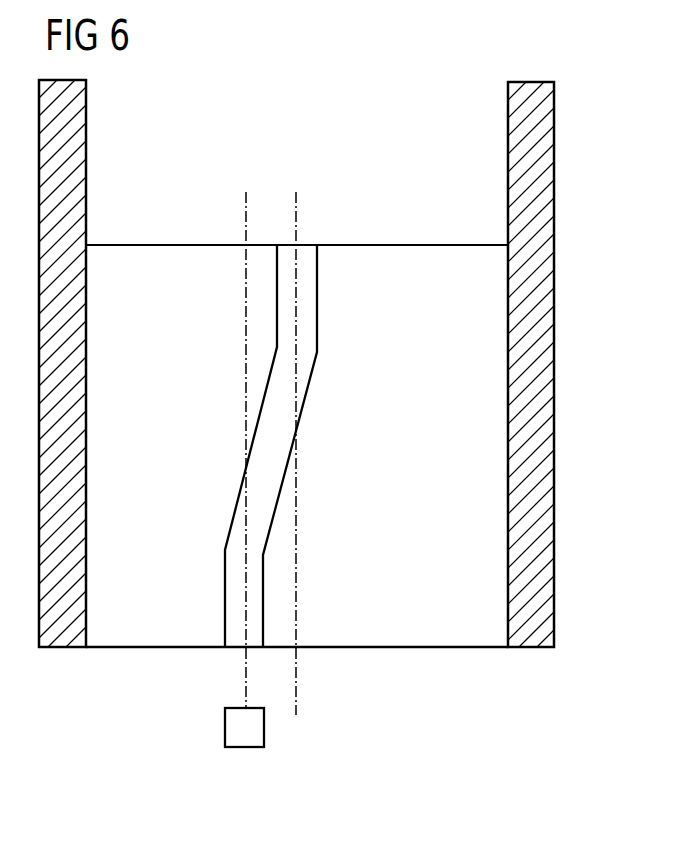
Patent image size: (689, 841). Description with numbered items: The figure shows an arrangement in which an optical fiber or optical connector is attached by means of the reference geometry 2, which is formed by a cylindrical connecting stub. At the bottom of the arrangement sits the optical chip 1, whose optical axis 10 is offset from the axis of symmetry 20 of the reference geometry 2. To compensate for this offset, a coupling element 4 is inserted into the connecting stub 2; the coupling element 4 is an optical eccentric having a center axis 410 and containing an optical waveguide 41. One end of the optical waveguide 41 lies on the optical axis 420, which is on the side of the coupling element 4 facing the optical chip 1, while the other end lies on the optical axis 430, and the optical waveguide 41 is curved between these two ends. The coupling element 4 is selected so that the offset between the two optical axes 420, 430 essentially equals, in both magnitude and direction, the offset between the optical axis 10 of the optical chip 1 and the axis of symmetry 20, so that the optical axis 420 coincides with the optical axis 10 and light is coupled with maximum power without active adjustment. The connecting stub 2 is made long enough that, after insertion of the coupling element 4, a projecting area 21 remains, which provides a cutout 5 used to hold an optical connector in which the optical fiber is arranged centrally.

The optical chip 1 is at (225, 727).
The reference geometry 2 is at (543, 463).
The projecting area 21 is at (543, 113).
The coupling element 4 is at (383, 640).
The cutout 5 is at (410, 158).
The optical axis of the optical chip 10 is at (186, 450).
The optical axis 420 is at (245, 355).
The axis of symmetry of the reference geometry 20 is at (379, 453).
The center axis 410 is at (379, 453).
The optical axis 430 is at (296, 545).
The optical waveguide 41 is at (265, 495).